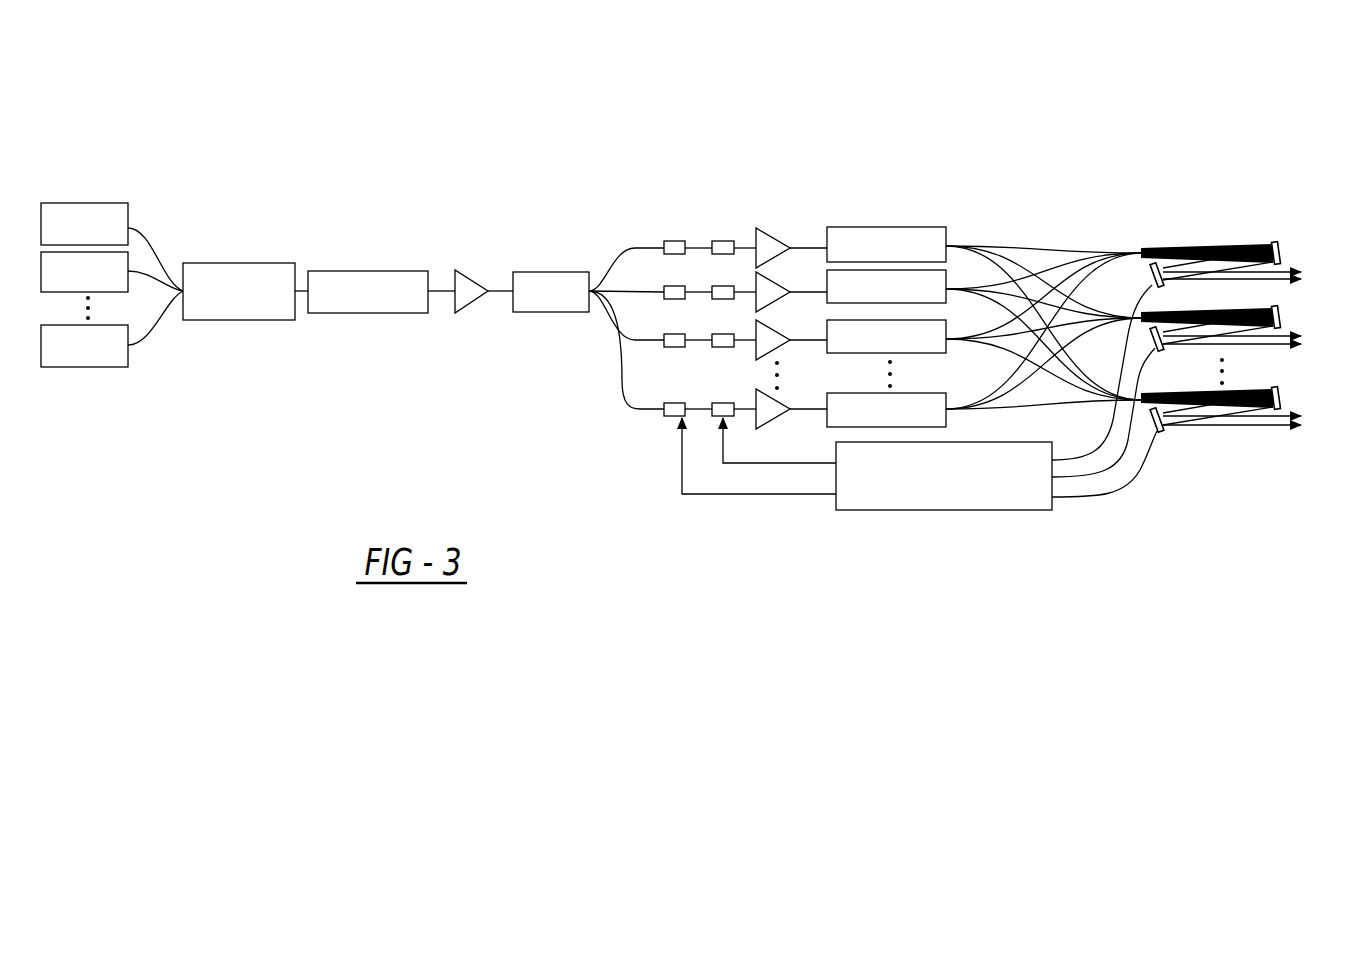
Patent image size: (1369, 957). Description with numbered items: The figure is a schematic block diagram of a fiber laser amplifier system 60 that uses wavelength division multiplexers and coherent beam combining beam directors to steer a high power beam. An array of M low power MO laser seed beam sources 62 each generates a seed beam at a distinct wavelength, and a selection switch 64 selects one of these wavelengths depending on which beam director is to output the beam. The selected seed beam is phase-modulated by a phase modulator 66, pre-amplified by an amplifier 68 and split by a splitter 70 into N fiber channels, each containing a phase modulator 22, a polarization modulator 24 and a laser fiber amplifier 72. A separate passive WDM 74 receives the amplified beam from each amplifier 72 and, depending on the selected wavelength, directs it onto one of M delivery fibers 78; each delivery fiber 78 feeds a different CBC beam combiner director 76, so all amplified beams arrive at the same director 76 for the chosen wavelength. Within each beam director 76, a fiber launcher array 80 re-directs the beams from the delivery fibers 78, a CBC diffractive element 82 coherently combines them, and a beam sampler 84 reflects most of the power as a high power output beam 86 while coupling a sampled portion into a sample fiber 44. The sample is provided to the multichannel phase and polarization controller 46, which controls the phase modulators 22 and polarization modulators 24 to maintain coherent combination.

The fiber laser amplifier system 60 is at (624, 96).
The MO laser seed beam sources 62 is at (108, 203).
The selection switch 64 is at (233, 263).
The phase modulator 66 is at (367, 271).
The amplifier 68 is at (469, 303).
The splitter 70 is at (536, 272).
The phase modulators 22 is at (676, 242).
The polarization modulators 24 is at (723, 242).
The laser fiber amplifiers 72 is at (777, 238).
The WDM 74 is at (870, 227).
The delivery fibers 78 is at (1025, 246).
The CBC beam combiner director 76 is at (1217, 200).
The fiber launcher array 80 is at (1148, 247).
The CBC diffractive element 82 is at (1282, 245).
The beam sampler 84 is at (1150, 275).
The high power output beam 86 is at (1275, 283).
The multichannel phase and polarization controller 46 is at (910, 510).
The sample fiber 44 is at (1091, 497).